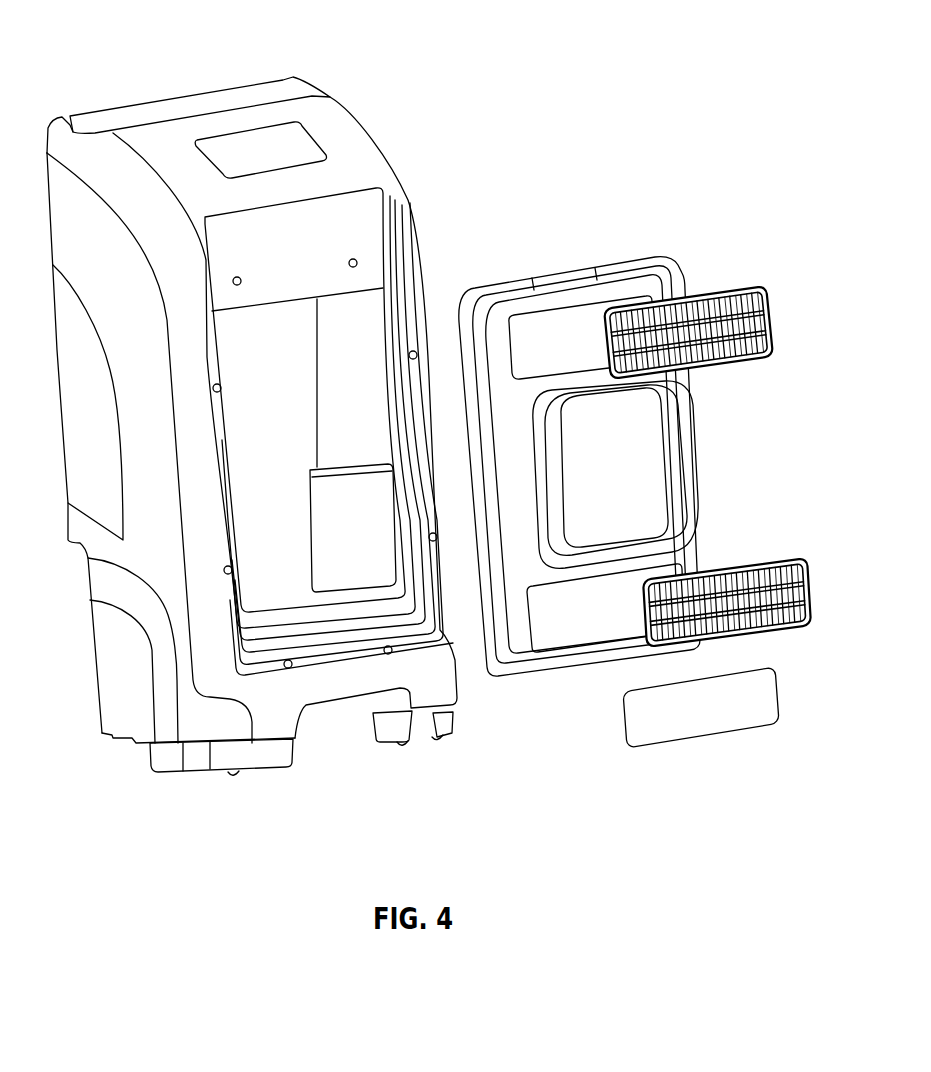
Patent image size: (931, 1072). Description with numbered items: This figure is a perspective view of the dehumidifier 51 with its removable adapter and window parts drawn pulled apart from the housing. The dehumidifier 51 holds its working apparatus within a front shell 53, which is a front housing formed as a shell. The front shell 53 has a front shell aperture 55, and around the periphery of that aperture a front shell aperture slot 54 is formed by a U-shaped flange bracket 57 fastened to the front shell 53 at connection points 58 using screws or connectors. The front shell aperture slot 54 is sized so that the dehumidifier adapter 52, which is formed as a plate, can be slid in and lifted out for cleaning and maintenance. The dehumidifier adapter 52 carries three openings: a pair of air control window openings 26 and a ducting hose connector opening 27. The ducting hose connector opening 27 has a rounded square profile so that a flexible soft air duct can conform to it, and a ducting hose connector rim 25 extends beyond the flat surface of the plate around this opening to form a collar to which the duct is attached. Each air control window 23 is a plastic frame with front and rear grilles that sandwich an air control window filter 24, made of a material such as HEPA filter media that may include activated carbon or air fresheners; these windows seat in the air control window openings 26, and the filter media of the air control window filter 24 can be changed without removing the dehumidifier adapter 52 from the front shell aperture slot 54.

The dehumidifier 51 is at (187, 107).
The front shell 53 is at (352, 170).
The front shell aperture slot 54 is at (398, 245).
The front shell aperture 55 is at (352, 305).
The U-shaped flange bracket 57 is at (407, 647).
The connection points 58 is at (233, 570).
The dehumidifier adapter 52 is at (622, 270).
The ducting hose connector rim 25 is at (697, 483).
The ducting hose connector opening 27 is at (595, 500).
The air control window opening 26 is at (580, 627).
The air control window 23 is at (747, 307).
The air control window filter 24 is at (642, 730).